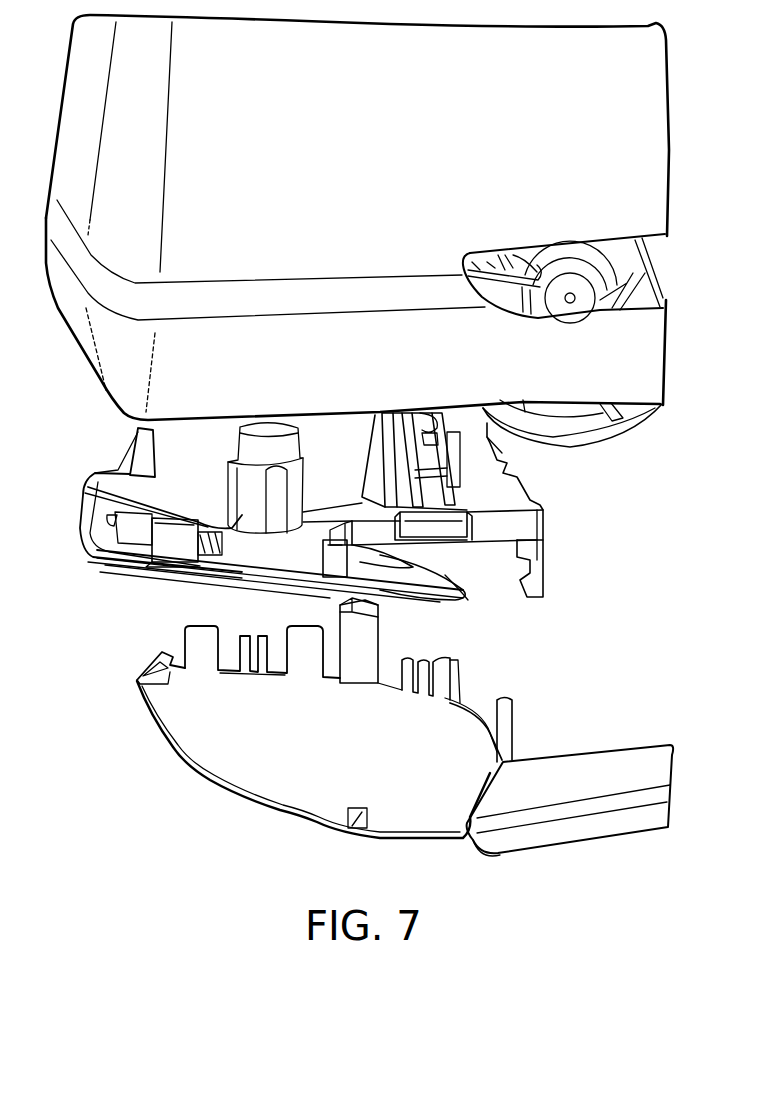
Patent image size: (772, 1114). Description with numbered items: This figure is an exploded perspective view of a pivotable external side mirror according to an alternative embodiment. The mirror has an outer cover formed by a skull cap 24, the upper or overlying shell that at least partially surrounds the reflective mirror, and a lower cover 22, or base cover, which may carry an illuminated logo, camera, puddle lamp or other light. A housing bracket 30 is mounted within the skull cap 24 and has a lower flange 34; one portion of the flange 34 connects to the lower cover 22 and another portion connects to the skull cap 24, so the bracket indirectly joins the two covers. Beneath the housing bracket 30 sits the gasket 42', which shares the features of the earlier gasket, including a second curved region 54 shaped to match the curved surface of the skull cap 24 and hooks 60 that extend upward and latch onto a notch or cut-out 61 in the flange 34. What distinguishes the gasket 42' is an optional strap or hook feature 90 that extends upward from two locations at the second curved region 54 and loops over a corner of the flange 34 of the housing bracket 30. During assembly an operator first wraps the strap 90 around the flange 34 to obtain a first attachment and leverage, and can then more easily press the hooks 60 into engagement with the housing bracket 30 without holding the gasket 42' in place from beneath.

The skull cap 24 is at (653, 128).
The lower cover 22 is at (623, 770).
The housing bracket 30 is at (502, 490).
The lower flange 34 is at (142, 478).
The gasket 42' is at (435, 588).
The second curved region 54 is at (115, 552).
The hooks 60 is at (347, 560).
The notch or cut-out 61 is at (382, 410).
The strap or hook feature 90 is at (140, 497).